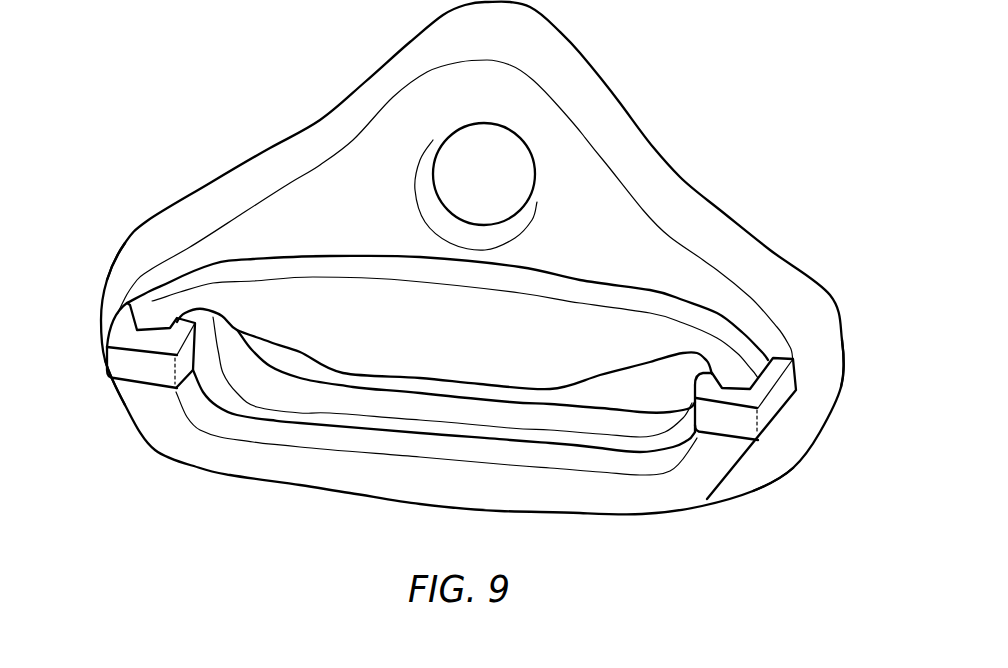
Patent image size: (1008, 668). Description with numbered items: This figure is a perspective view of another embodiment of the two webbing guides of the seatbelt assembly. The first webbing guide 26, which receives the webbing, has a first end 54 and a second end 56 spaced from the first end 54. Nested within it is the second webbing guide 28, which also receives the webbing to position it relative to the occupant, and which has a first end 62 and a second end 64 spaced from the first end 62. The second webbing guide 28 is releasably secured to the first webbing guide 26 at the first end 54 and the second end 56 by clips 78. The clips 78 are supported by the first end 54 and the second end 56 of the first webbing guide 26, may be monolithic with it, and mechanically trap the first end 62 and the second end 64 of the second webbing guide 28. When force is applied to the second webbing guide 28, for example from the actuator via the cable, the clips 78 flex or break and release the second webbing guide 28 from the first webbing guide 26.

The first webbing guide 26 is at (350, 170).
The second webbing guide 28 is at (608, 328).
The first end 54 is at (100, 327).
The second end 56 is at (820, 390).
The first end 62 is at (137, 393).
The second end 64 is at (748, 443).
The clip 78 is at (118, 370).